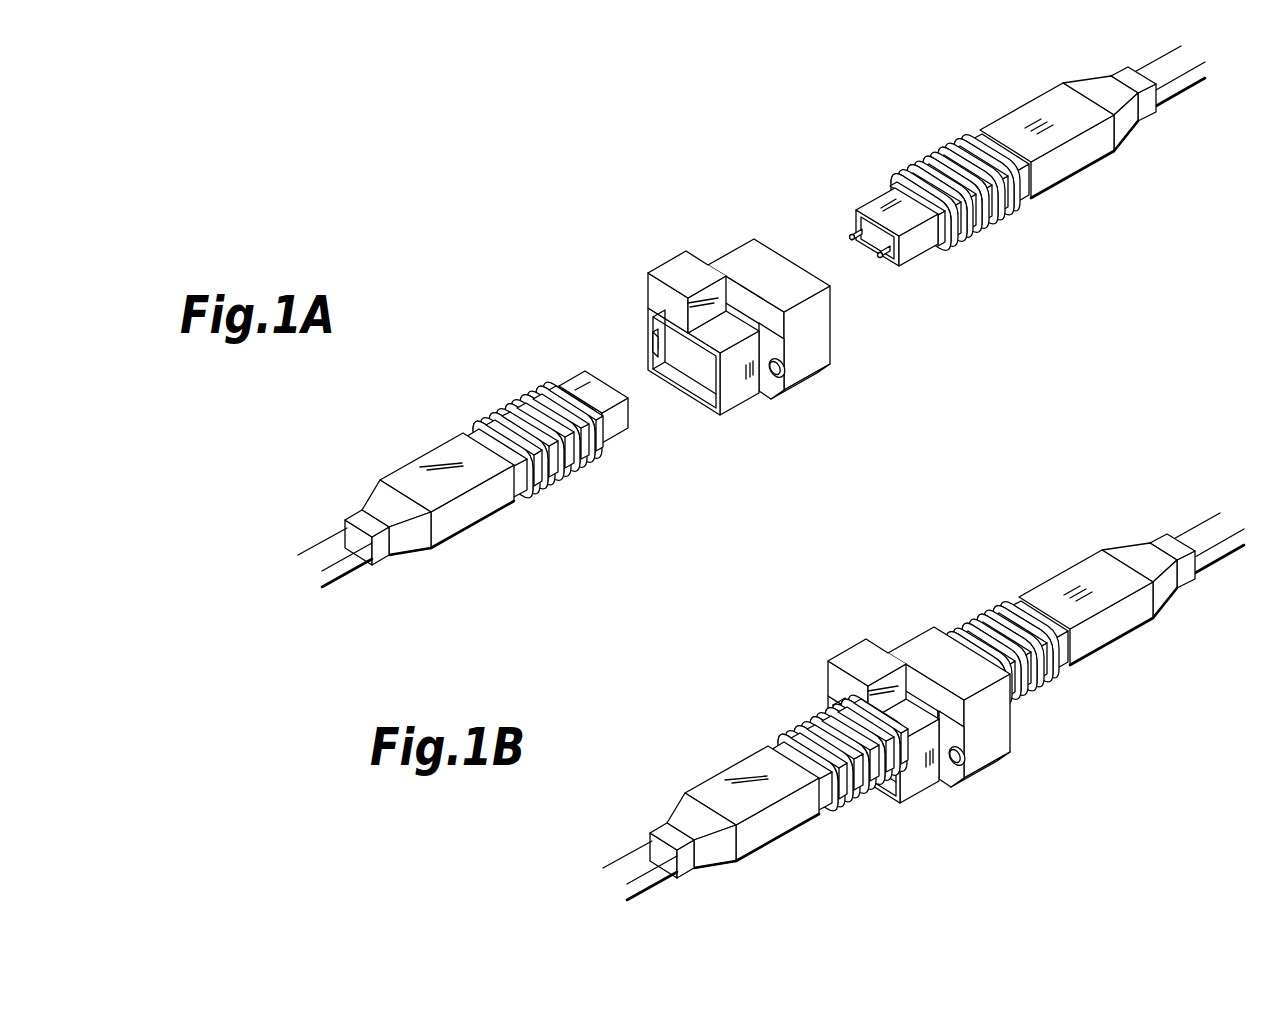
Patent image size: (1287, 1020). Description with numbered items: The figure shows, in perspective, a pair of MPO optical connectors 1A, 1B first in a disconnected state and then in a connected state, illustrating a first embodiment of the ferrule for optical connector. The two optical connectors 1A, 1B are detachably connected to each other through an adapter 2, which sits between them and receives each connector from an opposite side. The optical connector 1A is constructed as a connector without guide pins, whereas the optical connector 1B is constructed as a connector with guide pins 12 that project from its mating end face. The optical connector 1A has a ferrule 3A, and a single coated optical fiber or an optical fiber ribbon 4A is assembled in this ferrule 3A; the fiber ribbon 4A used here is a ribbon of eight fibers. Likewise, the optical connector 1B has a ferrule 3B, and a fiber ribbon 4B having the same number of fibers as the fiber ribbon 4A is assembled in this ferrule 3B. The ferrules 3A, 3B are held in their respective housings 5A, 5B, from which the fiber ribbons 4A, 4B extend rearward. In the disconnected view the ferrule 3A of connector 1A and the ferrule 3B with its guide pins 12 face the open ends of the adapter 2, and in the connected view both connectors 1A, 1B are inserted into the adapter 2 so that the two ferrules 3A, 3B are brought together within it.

In FIG. 1A, the optical connector 1A is at (530, 429).
In FIG. 1B, the optical connector 1A is at (779, 780).
In FIG. 1A, the optical connector 1B is at (974, 181).
In FIG. 1B, the optical connector 1B is at (1045, 619).
In FIG. 1A, the adapter 2 is at (706, 252).
In FIG. 1B, the adapter 2 is at (912, 648).
In FIG. 1A, the ferrule 3A is at (637, 415).
In FIG. 1A, the ferrule 3B is at (876, 256).
In FIG. 1A, the optical fiber ribbon 4A is at (352, 560).
In FIG. 1B, the optical fiber ribbon 4A is at (607, 858).
In FIG. 1A, the fiber ribbon 4B is at (1173, 98).
In FIG. 1B, the fiber ribbon 4B is at (1183, 540).
In FIG. 1A, the housing 5A is at (442, 453).
In FIG. 1B, the housing 5A is at (788, 817).
In FIG. 1A, the housing 5B is at (1033, 108).
In FIG. 1B, the housing 5B is at (1122, 622).
In FIG. 1A, the guide pins 12 is at (850, 234).